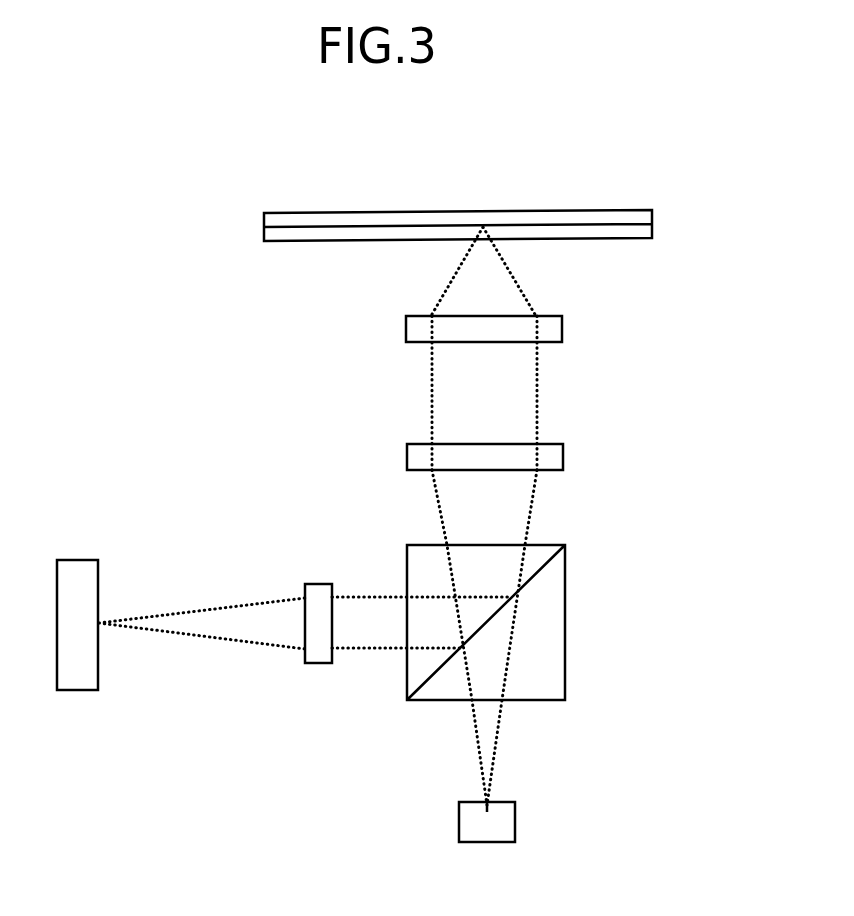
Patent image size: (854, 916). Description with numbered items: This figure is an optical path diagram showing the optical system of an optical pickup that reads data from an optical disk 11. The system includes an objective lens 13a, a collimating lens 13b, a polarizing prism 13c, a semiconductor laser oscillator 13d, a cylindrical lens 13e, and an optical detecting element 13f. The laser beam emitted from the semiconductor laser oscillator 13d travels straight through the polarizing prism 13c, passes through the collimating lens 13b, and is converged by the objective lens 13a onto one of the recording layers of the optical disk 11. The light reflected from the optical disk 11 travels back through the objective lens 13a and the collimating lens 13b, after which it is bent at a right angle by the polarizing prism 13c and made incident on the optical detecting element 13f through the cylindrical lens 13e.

The optical disk 11 is at (627, 210).
The objective lens 13a is at (562, 325).
The collimating lens 13b is at (563, 452).
The polarizing prism 13c is at (565, 605).
The semiconductor laser oscillator 13d is at (515, 823).
The cylindrical lens 13e is at (318, 584).
The optical detecting element 13f is at (82, 560).